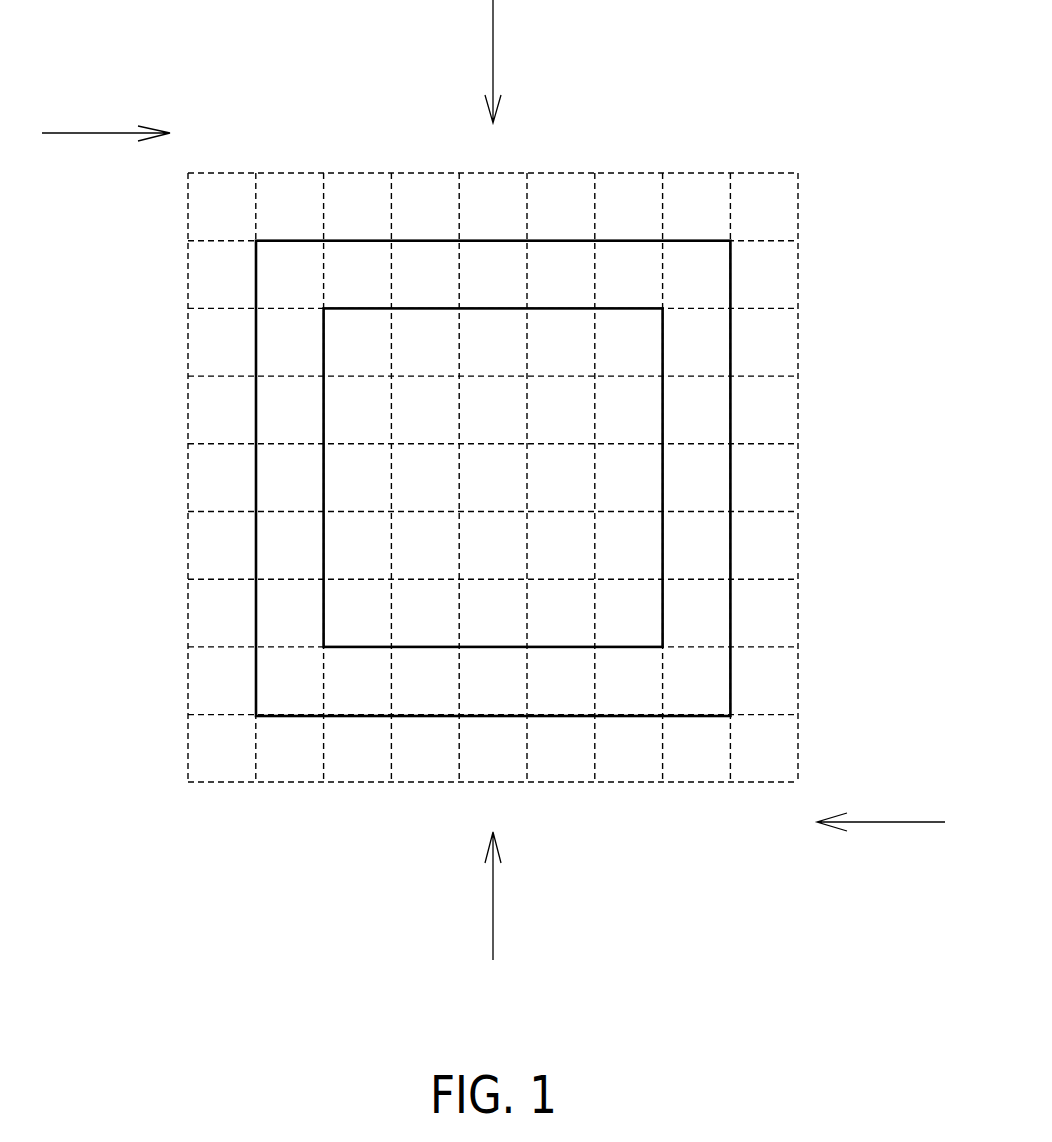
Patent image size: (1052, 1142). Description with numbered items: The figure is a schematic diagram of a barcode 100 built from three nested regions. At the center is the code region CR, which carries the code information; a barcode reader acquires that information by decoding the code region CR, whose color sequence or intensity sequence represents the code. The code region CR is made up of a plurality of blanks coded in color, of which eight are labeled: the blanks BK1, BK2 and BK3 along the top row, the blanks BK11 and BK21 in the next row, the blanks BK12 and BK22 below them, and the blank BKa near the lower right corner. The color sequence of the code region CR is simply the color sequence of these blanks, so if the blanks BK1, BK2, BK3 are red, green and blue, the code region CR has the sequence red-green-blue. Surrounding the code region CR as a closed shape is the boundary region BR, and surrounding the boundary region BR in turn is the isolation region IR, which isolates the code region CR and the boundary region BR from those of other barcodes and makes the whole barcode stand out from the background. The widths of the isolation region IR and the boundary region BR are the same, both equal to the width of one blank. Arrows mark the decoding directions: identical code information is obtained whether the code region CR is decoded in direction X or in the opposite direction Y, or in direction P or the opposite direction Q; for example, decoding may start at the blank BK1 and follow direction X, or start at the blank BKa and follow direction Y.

The barcode 100 is at (765, 98).
The isolation region IR is at (217, 767).
The boundary region BR is at (705, 345).
The code region CR is at (648, 590).
The blank BK1 is at (358, 342).
The blank BK2 is at (425, 342).
The blank BK3 is at (493, 342).
The blank BK11 is at (358, 410).
The blank BK21 is at (425, 410).
The blank BK12 is at (358, 478).
The blank BK22 is at (425, 478).
The blank BKa is at (629, 613).
The direction X is at (106, 119).
The direction Y is at (881, 808).
The direction P is at (502, 61).
The direction Q is at (505, 896).